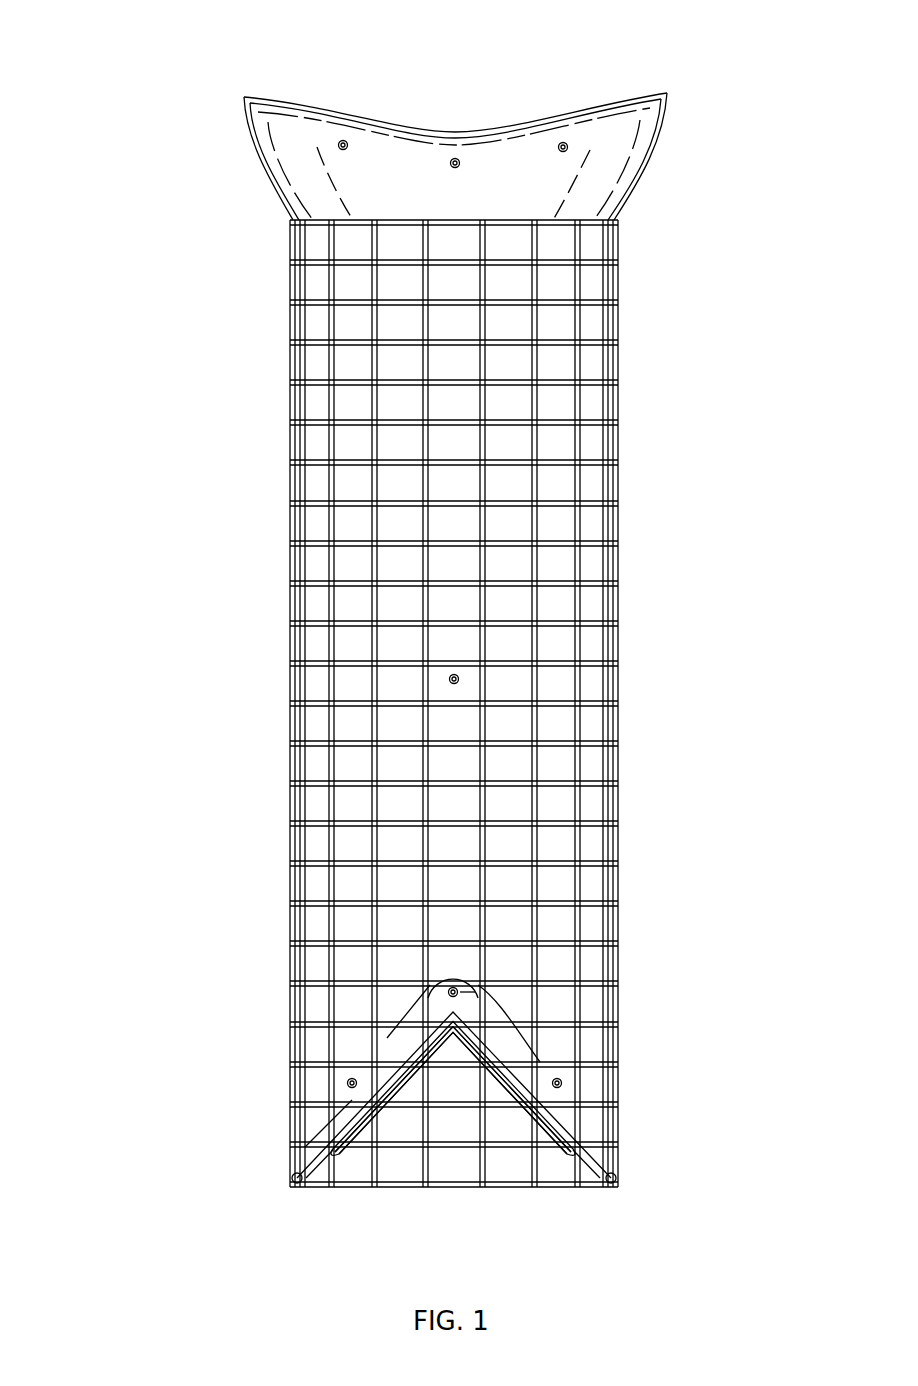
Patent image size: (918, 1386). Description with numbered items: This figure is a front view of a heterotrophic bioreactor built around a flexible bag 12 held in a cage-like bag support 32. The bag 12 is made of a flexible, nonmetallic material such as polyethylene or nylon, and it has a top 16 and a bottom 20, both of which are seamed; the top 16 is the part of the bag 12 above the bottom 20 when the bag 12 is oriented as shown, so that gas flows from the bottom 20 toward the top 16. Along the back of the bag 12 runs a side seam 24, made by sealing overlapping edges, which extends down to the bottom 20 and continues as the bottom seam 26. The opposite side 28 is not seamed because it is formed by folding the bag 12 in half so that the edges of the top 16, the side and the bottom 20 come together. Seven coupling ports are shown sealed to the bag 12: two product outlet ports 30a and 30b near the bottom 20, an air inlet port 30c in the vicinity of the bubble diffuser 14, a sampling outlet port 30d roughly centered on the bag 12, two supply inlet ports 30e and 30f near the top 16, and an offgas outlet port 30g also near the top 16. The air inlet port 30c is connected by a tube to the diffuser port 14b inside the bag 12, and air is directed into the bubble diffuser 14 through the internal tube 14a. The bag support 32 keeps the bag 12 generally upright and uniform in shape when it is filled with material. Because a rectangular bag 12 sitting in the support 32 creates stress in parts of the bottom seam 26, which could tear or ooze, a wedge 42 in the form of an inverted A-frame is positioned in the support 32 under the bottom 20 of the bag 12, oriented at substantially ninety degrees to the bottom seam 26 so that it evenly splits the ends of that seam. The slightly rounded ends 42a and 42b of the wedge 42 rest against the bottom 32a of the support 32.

The bag 12 is at (268, 178).
The bubble diffuser 14 is at (388, 1040).
The internal tube 14a is at (495, 1018).
The diffuser port 14b is at (473, 967).
The top 16 is at (255, 82).
The bottom 20 is at (310, 1118).
The side seam 24 is at (290, 855).
The bottom seam 26 is at (523, 1082).
The side 28 is at (612, 842).
The product outlet port 30a is at (348, 1082).
The product outlet port 30b is at (561, 1082).
The air inlet port 30c is at (449, 992).
The sampling outlet port 30d is at (450, 678).
The supply inlet port 30e is at (343, 140).
The supply inlet port 30f is at (563, 142).
The offgas outlet port 30g is at (455, 158).
The bag support 32 is at (290, 378).
The bottom of the support 32a is at (456, 1183).
The wedge 42 is at (383, 1095).
The rounded end 42a is at (293, 1172).
The rounded end 42b is at (616, 1172).